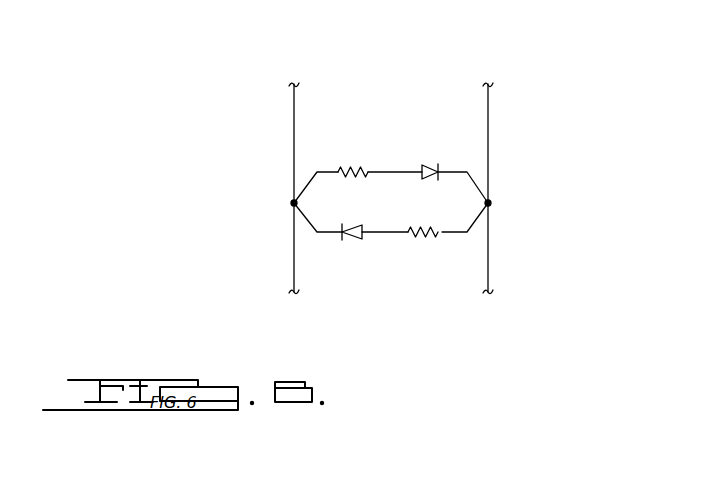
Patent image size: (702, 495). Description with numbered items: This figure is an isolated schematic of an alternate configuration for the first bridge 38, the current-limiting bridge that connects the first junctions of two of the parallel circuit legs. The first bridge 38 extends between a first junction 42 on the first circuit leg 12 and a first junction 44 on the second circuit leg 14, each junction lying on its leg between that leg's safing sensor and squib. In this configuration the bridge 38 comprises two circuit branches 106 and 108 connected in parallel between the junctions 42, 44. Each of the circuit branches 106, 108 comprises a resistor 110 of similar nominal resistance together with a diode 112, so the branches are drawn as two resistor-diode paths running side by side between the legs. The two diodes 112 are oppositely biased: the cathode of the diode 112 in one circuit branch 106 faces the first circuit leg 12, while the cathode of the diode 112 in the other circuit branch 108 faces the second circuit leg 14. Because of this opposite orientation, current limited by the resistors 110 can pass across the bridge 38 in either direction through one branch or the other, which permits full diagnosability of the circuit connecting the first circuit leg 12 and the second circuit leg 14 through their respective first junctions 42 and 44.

The first circuit leg 12 is at (295, 103).
The second circuit leg 14 is at (489, 108).
The first junction 42 is at (293, 203).
The first junction 44 is at (491, 203).
The circuit branch 106 is at (458, 234).
The circuit branch 108 is at (332, 172).
The resistor 110 is at (432, 227).
The diode 112 is at (440, 170).
The first bridge 38 is at (393, 265).